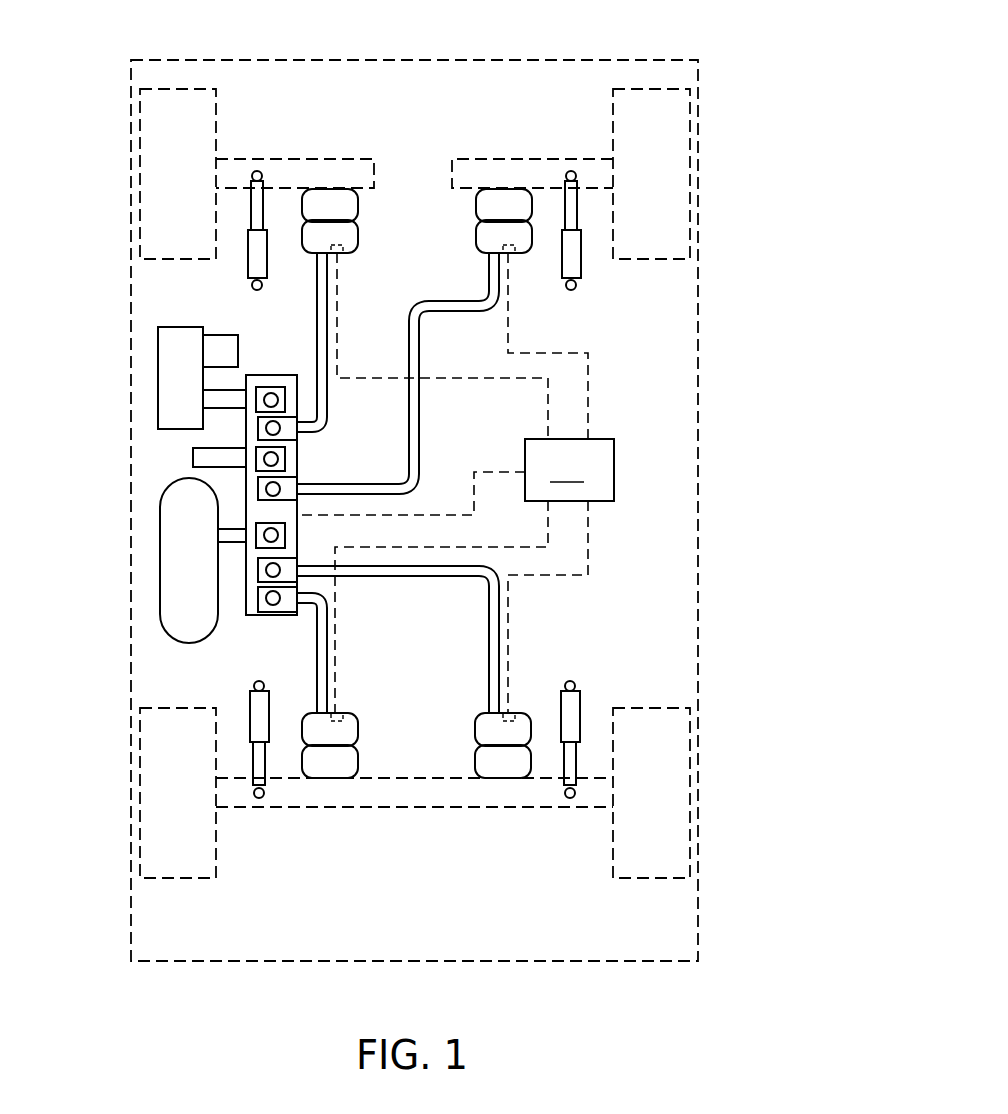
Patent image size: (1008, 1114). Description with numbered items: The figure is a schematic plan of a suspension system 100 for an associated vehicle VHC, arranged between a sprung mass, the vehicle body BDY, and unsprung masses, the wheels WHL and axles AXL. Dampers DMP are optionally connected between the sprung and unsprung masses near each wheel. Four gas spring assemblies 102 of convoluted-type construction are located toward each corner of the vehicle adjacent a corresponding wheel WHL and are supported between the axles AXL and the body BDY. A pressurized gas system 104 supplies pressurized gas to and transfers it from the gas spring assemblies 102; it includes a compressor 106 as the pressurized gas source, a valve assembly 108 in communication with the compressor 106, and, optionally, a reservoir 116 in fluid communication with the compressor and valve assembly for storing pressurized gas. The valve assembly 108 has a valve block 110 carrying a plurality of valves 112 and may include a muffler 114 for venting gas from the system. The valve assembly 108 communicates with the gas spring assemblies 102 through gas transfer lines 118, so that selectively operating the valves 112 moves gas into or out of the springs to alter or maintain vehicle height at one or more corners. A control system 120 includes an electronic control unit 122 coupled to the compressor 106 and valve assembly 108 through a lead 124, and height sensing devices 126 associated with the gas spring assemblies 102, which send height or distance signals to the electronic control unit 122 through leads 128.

The suspension system 100 is at (680, 296).
The gas spring assemblies 102 is at (468, 213).
The pressurized gas system 104 is at (155, 439).
The compressor 106 is at (165, 353).
The valve assembly 108 is at (296, 465).
The valve block 110 is at (268, 615).
The valves 112 is at (284, 487).
The muffler 114 is at (188, 463).
The reservoir 116 is at (175, 565).
The gas transfer lines 118 is at (329, 338).
The control system 120 is at (597, 438).
The electronic control unit 122 is at (569, 470).
The lead 124 is at (498, 471).
The height sensing devices 126 is at (343, 254).
The leads 128 is at (375, 379).
The vehicle VHC is at (638, 40).
The vehicle body BDY is at (572, 60).
The wheel WHL is at (150, 138).
The axle AXL is at (309, 158).
The dampers DMP is at (248, 269).